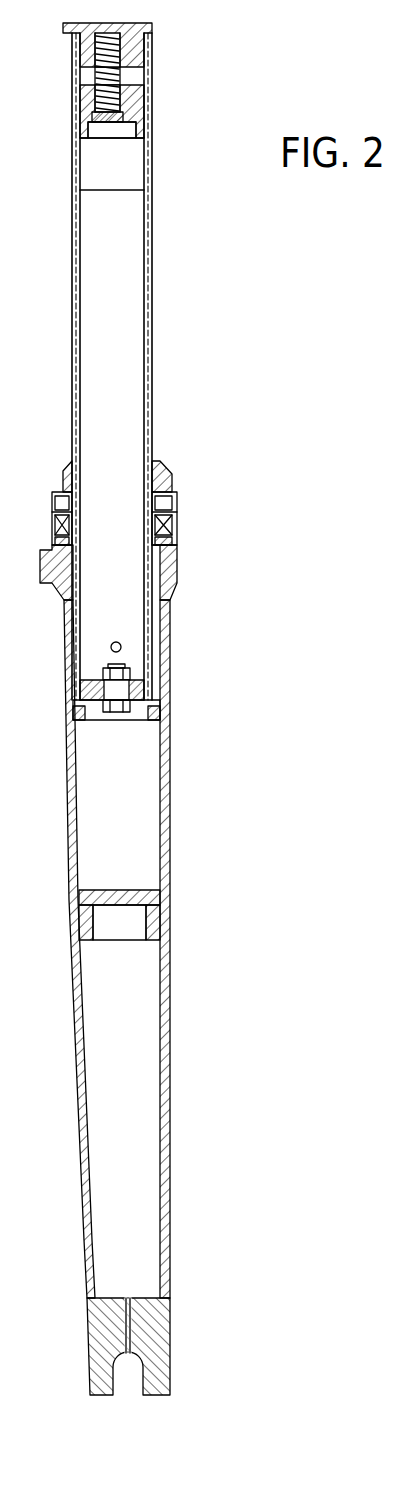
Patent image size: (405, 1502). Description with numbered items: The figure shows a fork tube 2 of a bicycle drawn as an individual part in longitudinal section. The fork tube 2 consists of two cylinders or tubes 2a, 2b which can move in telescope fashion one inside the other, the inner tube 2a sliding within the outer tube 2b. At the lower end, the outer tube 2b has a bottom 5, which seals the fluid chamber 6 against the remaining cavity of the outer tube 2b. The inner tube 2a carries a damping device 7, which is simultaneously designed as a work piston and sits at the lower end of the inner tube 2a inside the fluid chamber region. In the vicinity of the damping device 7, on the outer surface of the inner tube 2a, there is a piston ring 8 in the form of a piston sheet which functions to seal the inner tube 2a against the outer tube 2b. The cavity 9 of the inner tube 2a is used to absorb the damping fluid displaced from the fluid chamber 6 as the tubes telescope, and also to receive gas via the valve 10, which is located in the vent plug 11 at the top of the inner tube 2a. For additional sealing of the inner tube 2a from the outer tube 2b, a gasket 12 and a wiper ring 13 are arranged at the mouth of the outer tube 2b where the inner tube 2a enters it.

The fork tube 2 is at (220, 484).
The inner tube 2a is at (150, 338).
The outer tube 2b is at (170, 1022).
The bottom 5 is at (160, 888).
The fluid chamber 6 is at (145, 790).
The damping device 7 is at (150, 678).
The piston ring 8 is at (160, 697).
The cavity 9 is at (125, 275).
The valve 10 is at (140, 90).
The vent plug 11 is at (140, 118).
The gasket 12 is at (168, 526).
The wiper ring 13 is at (165, 470).